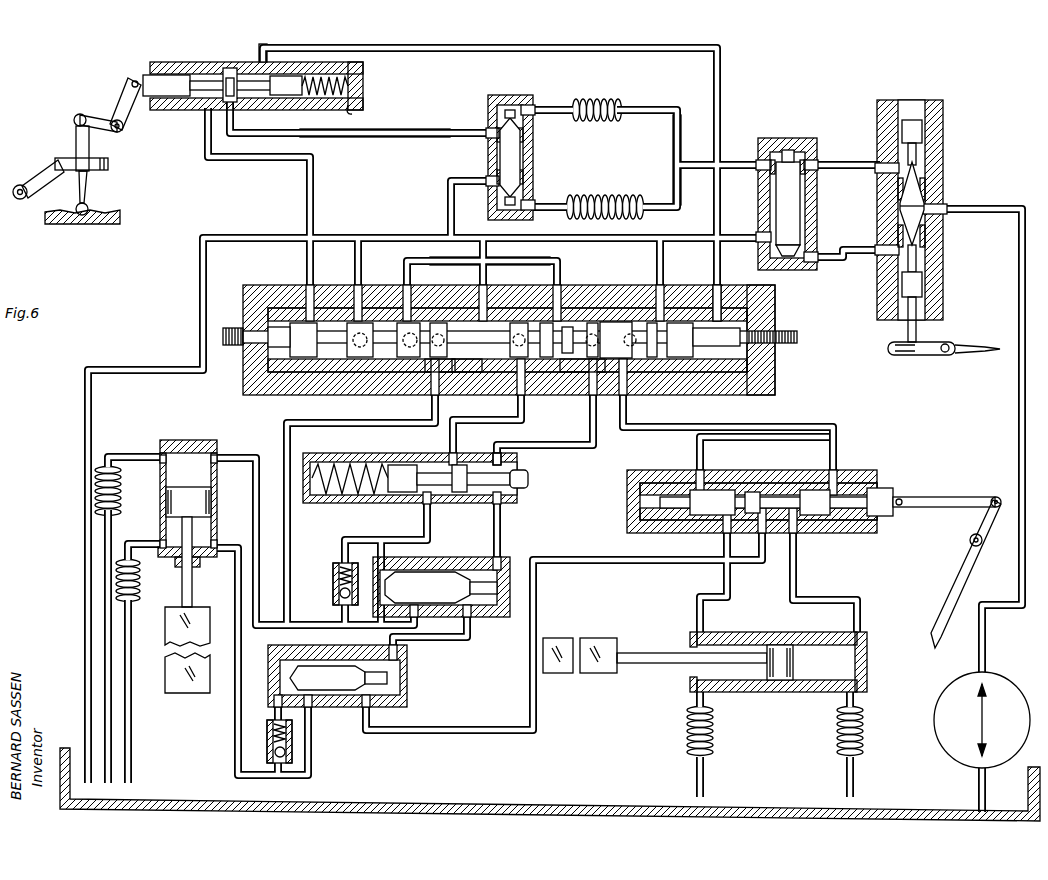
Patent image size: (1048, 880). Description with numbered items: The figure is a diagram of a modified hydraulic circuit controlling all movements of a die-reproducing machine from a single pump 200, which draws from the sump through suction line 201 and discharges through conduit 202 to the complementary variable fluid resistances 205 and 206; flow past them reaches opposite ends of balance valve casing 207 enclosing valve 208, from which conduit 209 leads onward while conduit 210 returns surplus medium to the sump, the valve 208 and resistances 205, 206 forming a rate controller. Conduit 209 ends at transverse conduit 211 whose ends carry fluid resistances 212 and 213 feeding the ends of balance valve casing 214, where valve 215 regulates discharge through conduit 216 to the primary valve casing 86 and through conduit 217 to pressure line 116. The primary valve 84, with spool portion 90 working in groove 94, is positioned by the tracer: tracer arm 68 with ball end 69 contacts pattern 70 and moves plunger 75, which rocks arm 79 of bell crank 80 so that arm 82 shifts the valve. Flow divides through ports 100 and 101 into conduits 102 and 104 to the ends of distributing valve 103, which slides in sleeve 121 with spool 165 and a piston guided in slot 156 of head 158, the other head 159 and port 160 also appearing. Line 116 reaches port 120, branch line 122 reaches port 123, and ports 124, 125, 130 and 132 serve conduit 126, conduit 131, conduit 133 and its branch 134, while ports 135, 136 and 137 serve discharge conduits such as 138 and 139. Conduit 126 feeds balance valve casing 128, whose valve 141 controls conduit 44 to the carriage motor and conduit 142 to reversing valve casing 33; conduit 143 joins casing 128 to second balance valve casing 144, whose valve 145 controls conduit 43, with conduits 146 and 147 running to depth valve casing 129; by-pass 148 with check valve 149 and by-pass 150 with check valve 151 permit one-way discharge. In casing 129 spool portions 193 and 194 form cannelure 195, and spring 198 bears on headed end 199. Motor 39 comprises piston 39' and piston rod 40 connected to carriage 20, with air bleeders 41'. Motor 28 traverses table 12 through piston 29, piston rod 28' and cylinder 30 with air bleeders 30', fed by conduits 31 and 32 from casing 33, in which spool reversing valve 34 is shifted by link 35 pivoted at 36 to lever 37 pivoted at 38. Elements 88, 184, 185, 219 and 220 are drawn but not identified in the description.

The table 12 is at (598, 645).
The carriage 20 is at (206, 638).
The motor 28 is at (782, 675).
The piston rod 28' is at (692, 675).
The piston 29 is at (780, 682).
The cylinder 30 is at (714, 675).
The air bleeders 30' is at (775, 744).
The conduit 31 is at (861, 608).
The conduit 32 is at (700, 608).
The reversing valve casing 33 is at (850, 485).
The reversing valve 34 is at (892, 488).
The link 35 is at (925, 498).
The pivot 36 is at (994, 498).
The lever 37 is at (960, 568).
The pivot 38 is at (970, 540).
The motor 39 is at (167, 503).
The piston 39' is at (169, 499).
The piston rod 40 is at (192, 590).
The air bleeders 41' is at (130, 620).
The conduit 43 is at (226, 460).
The conduit 44 is at (240, 545).
The tracer arm 68 is at (90, 178).
The ball end 69 is at (88, 210).
The pattern 70 is at (45, 215).
The plunger 75 is at (76, 148).
The arm 79 is at (128, 84).
The bell crank 80 is at (124, 128).
The arm 82 is at (96, 108).
The primary valve 84 is at (175, 66).
The casing 86 is at (352, 114).
The spring 88 is at (364, 88).
The spool portion 90 is at (230, 68).
The circumferential groove 94 is at (238, 108).
The port 100 is at (190, 108).
The port 101 is at (270, 50).
The conduit 102 is at (216, 160).
The distributing valve 103 is at (615, 322).
The conduit 104 is at (485, 50).
The pressure line 116 is at (403, 274).
The port 120 is at (445, 308).
The valve sleeve 121 is at (340, 360).
The branch pressure line 122 is at (520, 262).
The port 123 is at (568, 308).
The port 124 is at (428, 372).
The port 125 is at (522, 395).
The conduit 126 is at (360, 425).
The balance valve casing 128 is at (408, 702).
The depth valve casing 129 is at (402, 455).
The port 130 is at (583, 395).
The conduit 131 is at (560, 445).
The port 132 is at (640, 395).
The conduit 133 is at (706, 440).
The branch conduit 134 is at (838, 440).
The port 135 is at (365, 365).
The port 136 is at (458, 395).
The port 137 is at (672, 300).
The branch discharge conduit 138 is at (356, 270).
The branch discharge conduit 139 is at (486, 285).
The balance valve 141 is at (350, 707).
The conduit 142 is at (605, 565).
The conduit 143 is at (470, 630).
The second balance valve casing 144 is at (480, 565).
The balance valve 145 is at (440, 575).
The conduit 146 is at (500, 530).
The conduit 147 is at (386, 548).
The by-pass conduit 148 is at (343, 545).
The check valve 149 is at (333, 585).
The by-pass conduit 150 is at (275, 712).
The check valve 151 is at (267, 748).
The elongated slot 156 is at (270, 370).
The head 158 is at (243, 385).
The head 159 is at (775, 380).
The port 160 is at (290, 295).
The cylindrical spool 165 is at (400, 372).
The valve land 184 is at (785, 490).
The valve land 185 is at (725, 490).
The spool portion 193 is at (462, 495).
The spool portion 194 is at (522, 478).
The cannelure 195 is at (494, 455).
The spring 198 is at (330, 500).
The enlarged headed end 199 is at (400, 495).
The pump 200 is at (934, 710).
The suction line 201 is at (980, 777).
The conduit 202 is at (1015, 420).
The variable fluid resistance 205 is at (928, 190).
The variable fluid resistance 206 is at (928, 240).
The balance valve casing 207 is at (800, 140).
The balance valve 208 is at (776, 205).
The conduit 209 is at (690, 169).
The conduit 210 is at (712, 238).
The transverse conduit 211 is at (677, 145).
The fluid resistance 212 is at (600, 103).
The fluid resistance 213 is at (615, 198).
The balance valve casing 214 is at (528, 150).
The balance valve 215 is at (515, 160).
The conduit 216 is at (380, 136).
The conduit 217 is at (451, 182).
The valve land 219 is at (295, 358).
The port 220 is at (735, 300).